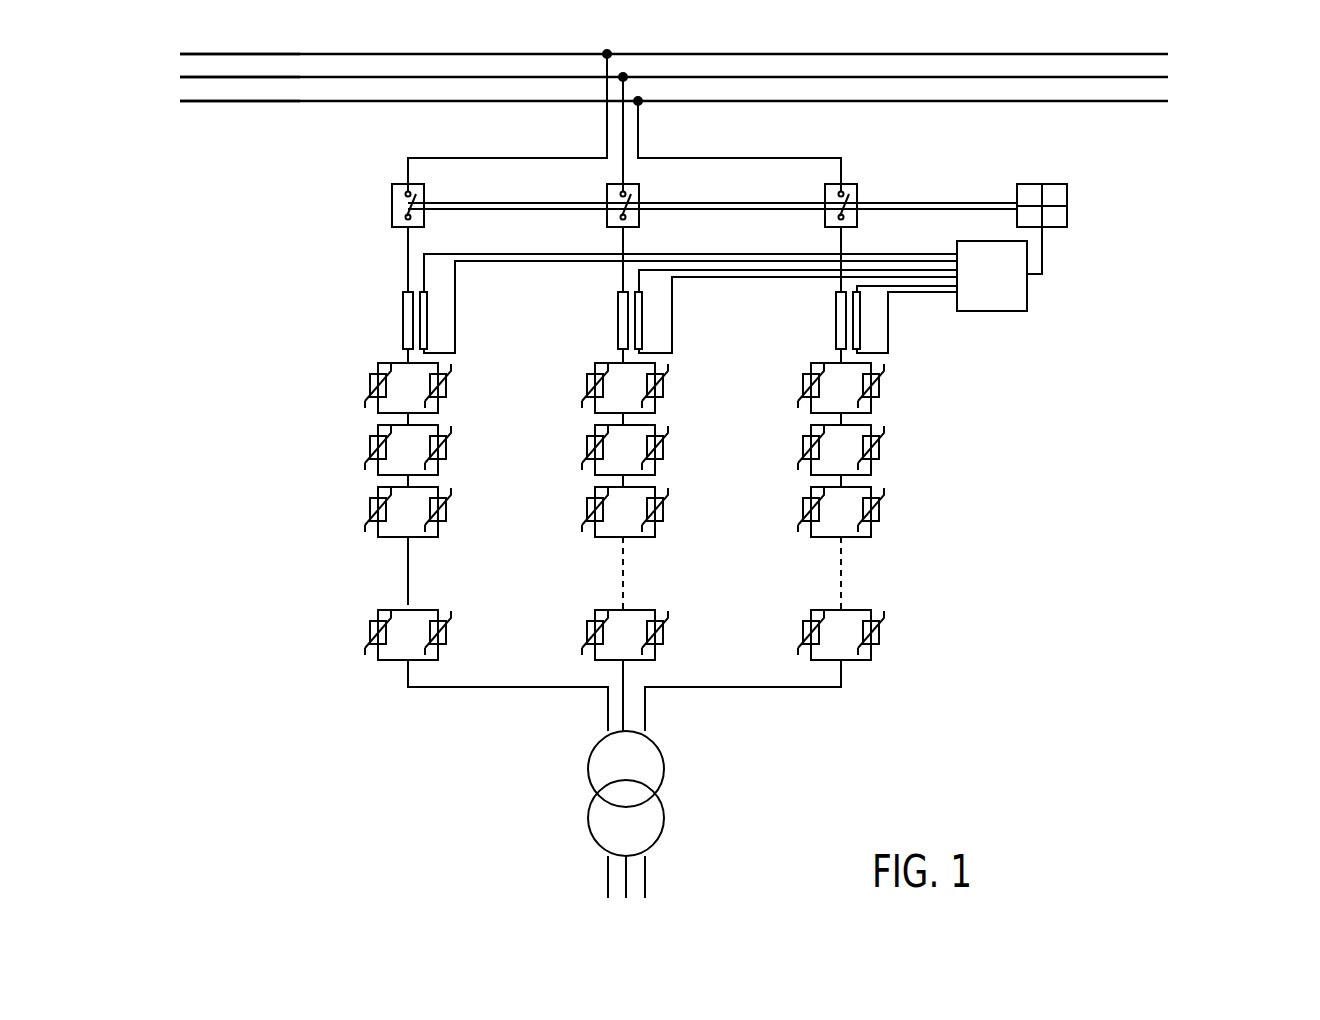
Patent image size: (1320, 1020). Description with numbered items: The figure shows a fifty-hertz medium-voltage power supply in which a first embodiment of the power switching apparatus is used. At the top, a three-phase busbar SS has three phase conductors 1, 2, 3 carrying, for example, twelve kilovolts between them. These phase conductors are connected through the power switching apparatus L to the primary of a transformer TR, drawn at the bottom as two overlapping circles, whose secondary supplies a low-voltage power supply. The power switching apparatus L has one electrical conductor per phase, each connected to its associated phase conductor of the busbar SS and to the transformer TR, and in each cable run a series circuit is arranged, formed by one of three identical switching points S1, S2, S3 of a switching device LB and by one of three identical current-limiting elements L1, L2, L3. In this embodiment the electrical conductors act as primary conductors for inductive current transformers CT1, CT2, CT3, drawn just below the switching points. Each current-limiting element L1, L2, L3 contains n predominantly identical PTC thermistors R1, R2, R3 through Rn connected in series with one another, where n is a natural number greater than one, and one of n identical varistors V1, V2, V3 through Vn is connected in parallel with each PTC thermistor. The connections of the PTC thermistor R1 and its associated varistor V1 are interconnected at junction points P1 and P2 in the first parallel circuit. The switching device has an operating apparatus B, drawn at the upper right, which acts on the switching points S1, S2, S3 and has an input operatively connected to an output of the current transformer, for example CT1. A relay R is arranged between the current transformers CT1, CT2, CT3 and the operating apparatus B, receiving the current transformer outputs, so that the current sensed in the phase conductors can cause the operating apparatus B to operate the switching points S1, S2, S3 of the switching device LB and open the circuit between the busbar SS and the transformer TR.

The phase conductor 1 is at (216, 54).
The phase conductor 2 is at (247, 77).
The phase conductor 3 is at (268, 101).
The three-phase busbar SS is at (1172, 42).
The switching point S1 is at (412, 190).
The switching point S2 is at (627, 190).
The switching point S3 is at (845, 190).
The switching device LB is at (952, 203).
The operating apparatus B is at (1057, 215).
The relay R is at (1018, 290).
The inductive current transformer CT1 is at (412, 302).
The inductive current transformer CT2 is at (629, 302).
The inductive current transformer CT3 is at (850, 306).
The junction point P1 is at (407, 358).
The junction point P2 is at (406, 416).
The PTC thermistor R1 is at (377, 382).
The PTC thermistor R2 is at (377, 444).
The PTC thermistor R3 is at (377, 506).
The PTC thermistor Rn is at (377, 629).
The varistor V1 is at (447, 392).
The varistor V2 is at (447, 454).
The varistor V3 is at (447, 516).
The varistor Vn is at (447, 639).
The current-limiting element L1 is at (410, 512).
The current-limiting element L2 is at (594, 382).
The current-limiting element L3 is at (810, 382).
The power switching apparatus L is at (1008, 612).
The transformer TR is at (655, 793).